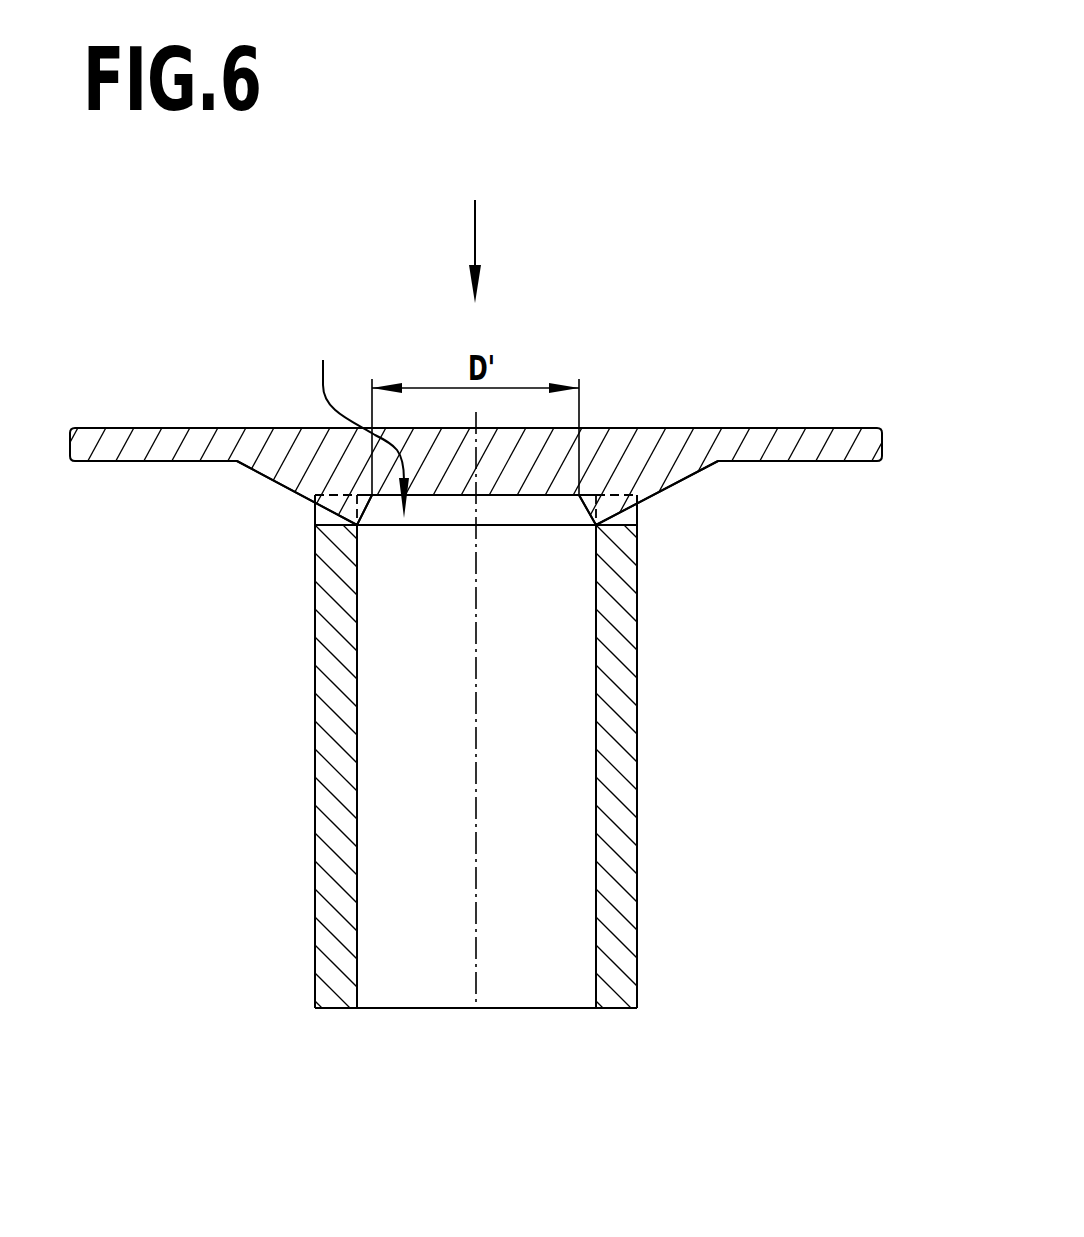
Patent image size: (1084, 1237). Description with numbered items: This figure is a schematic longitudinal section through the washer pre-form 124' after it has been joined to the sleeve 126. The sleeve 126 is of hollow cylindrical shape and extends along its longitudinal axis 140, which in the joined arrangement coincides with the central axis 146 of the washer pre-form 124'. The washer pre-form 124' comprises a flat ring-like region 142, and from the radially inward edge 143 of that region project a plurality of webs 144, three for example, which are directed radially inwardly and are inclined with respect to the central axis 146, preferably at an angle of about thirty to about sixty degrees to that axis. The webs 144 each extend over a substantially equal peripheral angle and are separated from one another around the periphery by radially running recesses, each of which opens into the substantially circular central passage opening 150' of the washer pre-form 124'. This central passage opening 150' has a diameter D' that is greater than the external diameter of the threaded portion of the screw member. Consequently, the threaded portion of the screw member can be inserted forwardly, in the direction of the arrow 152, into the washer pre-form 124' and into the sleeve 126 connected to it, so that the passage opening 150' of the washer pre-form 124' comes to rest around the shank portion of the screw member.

The washer pre-form 124' is at (472, 451).
The sleeve 126 is at (625, 803).
The longitudinal axis 140 is at (476, 437).
The flat ring-like region 142 is at (107, 455).
The radially inward edge 143 is at (247, 428).
The webs 144 is at (280, 472).
The central axis 146 is at (476, 577).
The central passage opening 150' is at (353, 419).
The arrow 152 is at (473, 222).